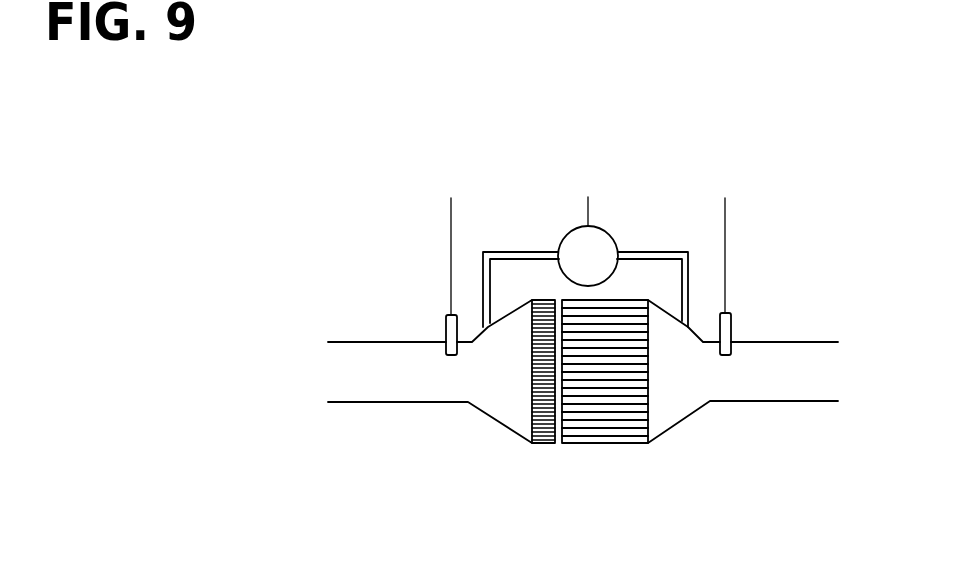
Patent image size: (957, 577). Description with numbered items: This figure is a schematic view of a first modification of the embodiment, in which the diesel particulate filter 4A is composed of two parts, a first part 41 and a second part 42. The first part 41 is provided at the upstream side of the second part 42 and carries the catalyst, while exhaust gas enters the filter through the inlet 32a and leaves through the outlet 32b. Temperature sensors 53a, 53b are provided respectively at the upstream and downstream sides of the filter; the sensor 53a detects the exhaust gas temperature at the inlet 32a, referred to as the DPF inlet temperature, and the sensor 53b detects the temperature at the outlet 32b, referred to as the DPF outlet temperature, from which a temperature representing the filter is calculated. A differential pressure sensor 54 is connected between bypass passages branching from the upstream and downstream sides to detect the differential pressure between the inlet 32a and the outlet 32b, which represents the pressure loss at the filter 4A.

The diesel particulate filter 4A is at (601, 428).
The first part 41 is at (542, 425).
The second part 42 is at (602, 425).
The inlet 32a is at (503, 390).
The outlet 32b is at (677, 390).
The temperature sensor 53a is at (443, 330).
The temperature sensor 53b is at (732, 327).
The differential pressure sensor 54 is at (568, 230).